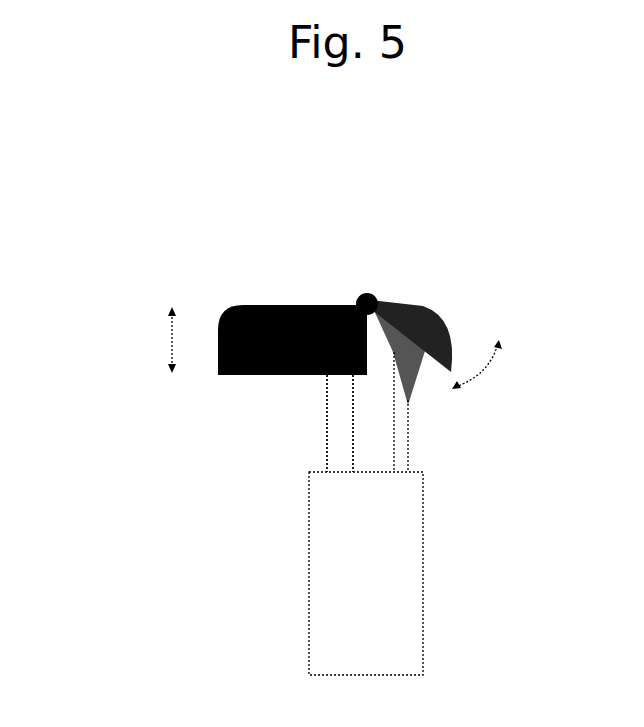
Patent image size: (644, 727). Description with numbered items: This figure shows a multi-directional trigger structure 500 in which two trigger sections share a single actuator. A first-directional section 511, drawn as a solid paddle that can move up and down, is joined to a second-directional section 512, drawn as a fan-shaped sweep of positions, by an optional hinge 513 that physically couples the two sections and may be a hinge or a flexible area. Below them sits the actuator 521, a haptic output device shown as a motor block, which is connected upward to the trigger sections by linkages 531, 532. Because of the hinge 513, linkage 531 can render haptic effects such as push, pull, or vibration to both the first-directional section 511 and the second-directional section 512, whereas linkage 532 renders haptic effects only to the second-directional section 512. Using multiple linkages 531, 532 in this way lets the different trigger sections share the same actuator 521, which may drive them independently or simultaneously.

The multi-directional trigger structure 500 is at (377, 99).
The first-directional section 511 is at (218, 374).
The second-directional section 512 is at (452, 343).
The hinge 513 is at (360, 296).
The actuator 521 is at (423, 607).
The linkage 531 is at (326, 441).
The linkage 532 is at (415, 418).